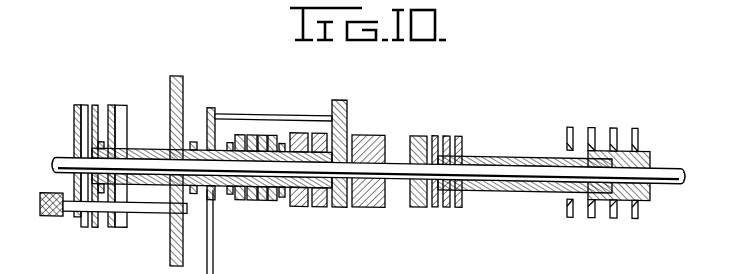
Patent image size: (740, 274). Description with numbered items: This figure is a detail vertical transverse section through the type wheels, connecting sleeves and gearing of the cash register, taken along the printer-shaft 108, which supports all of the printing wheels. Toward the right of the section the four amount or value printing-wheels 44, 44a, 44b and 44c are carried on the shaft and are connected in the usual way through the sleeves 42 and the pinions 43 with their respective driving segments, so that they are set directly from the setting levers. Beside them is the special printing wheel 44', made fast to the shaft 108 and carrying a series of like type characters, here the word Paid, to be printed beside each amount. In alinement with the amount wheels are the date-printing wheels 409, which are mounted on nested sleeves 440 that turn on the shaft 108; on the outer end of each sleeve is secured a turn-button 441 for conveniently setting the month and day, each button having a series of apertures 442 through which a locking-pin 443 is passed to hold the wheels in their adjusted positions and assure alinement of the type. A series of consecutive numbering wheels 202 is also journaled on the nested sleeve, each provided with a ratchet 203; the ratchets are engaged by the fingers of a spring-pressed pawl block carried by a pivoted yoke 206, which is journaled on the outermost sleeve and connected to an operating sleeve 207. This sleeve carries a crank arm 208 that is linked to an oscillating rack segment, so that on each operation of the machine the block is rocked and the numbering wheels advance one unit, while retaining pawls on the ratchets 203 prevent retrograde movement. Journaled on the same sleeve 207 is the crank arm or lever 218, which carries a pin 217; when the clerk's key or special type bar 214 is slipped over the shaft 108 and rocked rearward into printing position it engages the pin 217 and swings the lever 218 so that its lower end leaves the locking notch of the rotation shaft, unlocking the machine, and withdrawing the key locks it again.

The turn-button 441 is at (113, 102).
The sleeve 440 is at (158, 147).
The apertures 442 is at (98, 226).
The locking-pin 443 is at (152, 208).
The crank arm or lever 218 is at (212, 244).
The crank arm 208 is at (195, 138).
The operating sleeve 207 is at (228, 188).
The pivoted yoke 206 is at (230, 79).
The pin 217 is at (308, 112).
The consecutive numbering wheels 202 is at (271, 129).
The ratchets 203 is at (281, 138).
The date-printing wheels 409 is at (313, 201).
The key 214 is at (347, 96).
The special printing wheel 44' is at (369, 186).
The amount or value printing-wheel 44 is at (412, 160).
The amount or value printing-wheel 44a is at (434, 199).
The amount or value printing-wheel 44b is at (447, 129).
The amount or value printing-wheel 44c is at (459, 192).
The sleeves 42 is at (521, 151).
The pinions 43 is at (612, 222).
The printer-shaft 108 is at (684, 172).